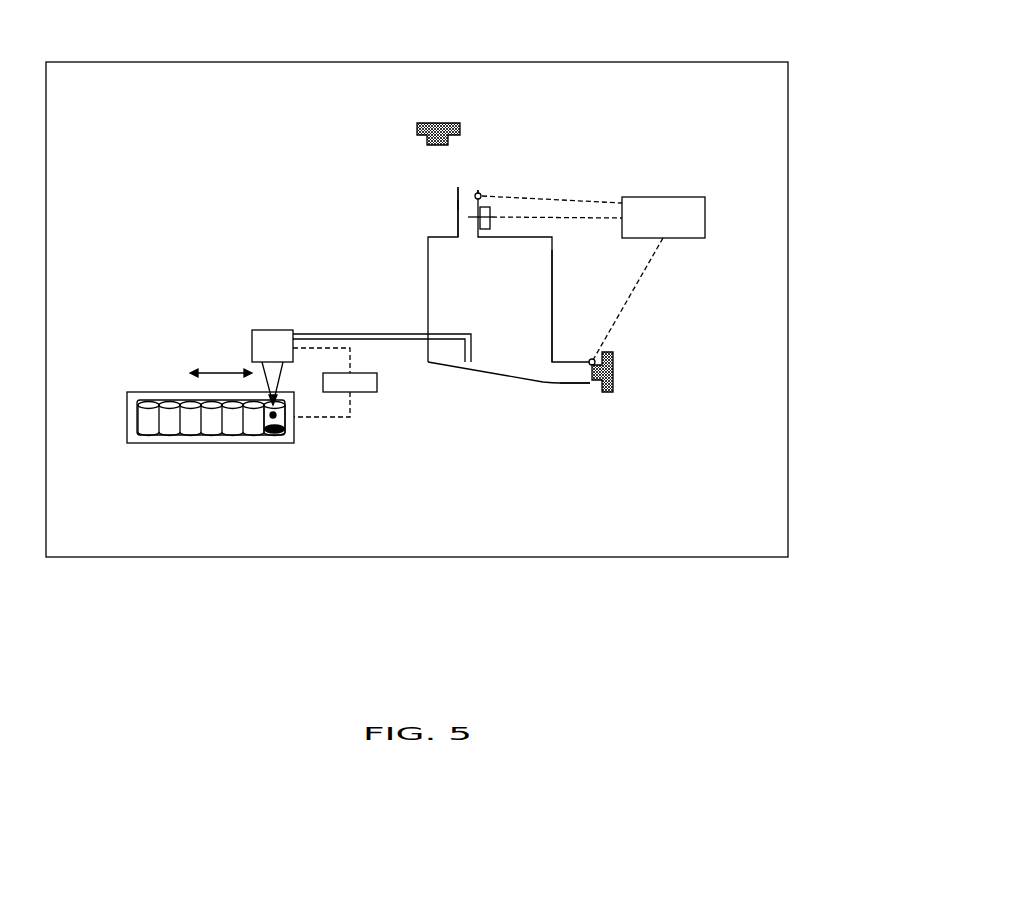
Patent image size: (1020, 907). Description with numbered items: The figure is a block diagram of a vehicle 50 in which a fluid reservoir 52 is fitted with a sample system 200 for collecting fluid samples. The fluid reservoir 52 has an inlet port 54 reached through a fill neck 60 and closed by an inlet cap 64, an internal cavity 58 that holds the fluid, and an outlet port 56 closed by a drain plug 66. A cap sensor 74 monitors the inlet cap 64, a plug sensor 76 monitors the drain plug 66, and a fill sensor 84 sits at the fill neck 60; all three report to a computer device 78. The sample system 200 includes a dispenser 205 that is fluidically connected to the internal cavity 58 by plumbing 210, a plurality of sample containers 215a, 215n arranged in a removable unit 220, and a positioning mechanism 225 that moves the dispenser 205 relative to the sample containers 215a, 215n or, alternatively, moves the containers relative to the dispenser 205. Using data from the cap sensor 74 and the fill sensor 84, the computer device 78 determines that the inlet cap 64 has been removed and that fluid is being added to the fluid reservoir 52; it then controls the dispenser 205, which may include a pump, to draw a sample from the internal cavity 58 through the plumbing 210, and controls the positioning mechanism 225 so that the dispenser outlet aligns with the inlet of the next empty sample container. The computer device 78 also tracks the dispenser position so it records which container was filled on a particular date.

The vehicle 50 is at (638, 62).
The fluid reservoir 52 is at (428, 278).
The inlet port 54 is at (464, 180).
The outlet port 56 is at (584, 384).
The internal cavity 58 is at (538, 292).
The fill neck 60 is at (457, 210).
The inlet cap 64 is at (460, 123).
The drain plug 66 is at (613, 387).
The cap sensor 74 is at (481, 192).
The plug sensor 76 is at (597, 360).
The computer device 78 is at (707, 238).
The fill sensor 84 is at (490, 224).
The sample system 200 is at (144, 326).
The dispenser 205 is at (272, 330).
The plumbing 210 is at (360, 334).
The sample container 215a is at (146, 442).
The sample container 215n is at (272, 442).
The removable unit 220 is at (127, 403).
The positioning mechanism 225 is at (373, 393).